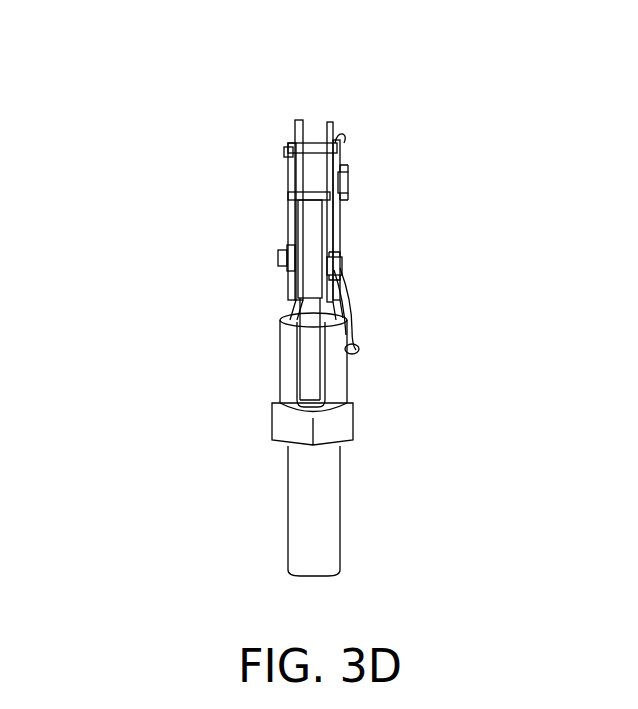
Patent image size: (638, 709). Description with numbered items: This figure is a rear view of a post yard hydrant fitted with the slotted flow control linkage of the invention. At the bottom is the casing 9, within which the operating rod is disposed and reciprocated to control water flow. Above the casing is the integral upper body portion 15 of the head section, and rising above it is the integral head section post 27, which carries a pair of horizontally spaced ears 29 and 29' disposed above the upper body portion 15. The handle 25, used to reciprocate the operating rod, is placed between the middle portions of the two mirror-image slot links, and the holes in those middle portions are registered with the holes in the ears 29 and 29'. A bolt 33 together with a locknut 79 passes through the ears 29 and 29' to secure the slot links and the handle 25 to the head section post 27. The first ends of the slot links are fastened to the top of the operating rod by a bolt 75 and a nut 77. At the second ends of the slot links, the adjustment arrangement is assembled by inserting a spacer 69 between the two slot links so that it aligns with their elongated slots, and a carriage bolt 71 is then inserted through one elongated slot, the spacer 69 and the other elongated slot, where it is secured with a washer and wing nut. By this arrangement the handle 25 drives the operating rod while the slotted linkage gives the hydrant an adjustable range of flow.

The casing 9 is at (318, 513).
The upper body portion 15 is at (287, 362).
The handle 25 is at (308, 330).
The head section post 27 is at (343, 240).
The ear 29 is at (204, 210).
The ear 29' is at (408, 221).
The bolt 33 is at (290, 189).
The spacer 69 is at (318, 145).
The carriage bolt 71 is at (283, 150).
The bolt 75 is at (342, 285).
The nut 77 is at (275, 262).
The locknut 79 is at (353, 180).